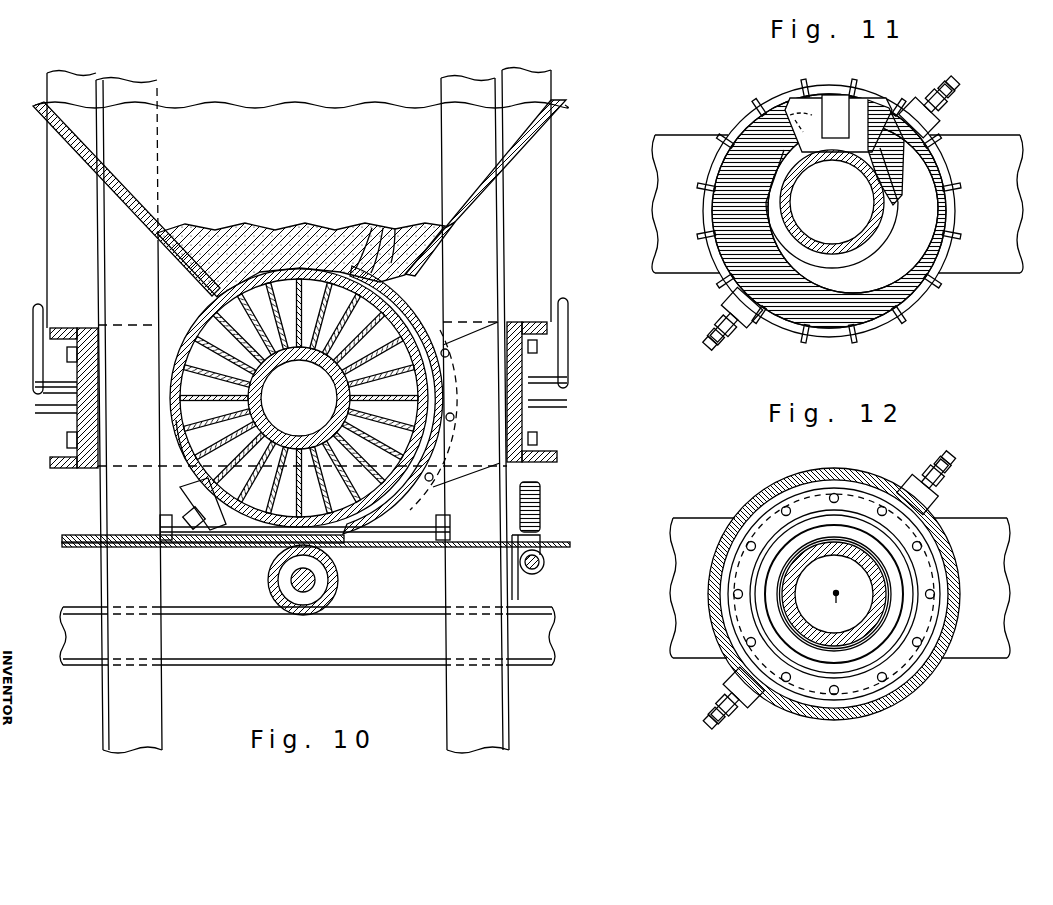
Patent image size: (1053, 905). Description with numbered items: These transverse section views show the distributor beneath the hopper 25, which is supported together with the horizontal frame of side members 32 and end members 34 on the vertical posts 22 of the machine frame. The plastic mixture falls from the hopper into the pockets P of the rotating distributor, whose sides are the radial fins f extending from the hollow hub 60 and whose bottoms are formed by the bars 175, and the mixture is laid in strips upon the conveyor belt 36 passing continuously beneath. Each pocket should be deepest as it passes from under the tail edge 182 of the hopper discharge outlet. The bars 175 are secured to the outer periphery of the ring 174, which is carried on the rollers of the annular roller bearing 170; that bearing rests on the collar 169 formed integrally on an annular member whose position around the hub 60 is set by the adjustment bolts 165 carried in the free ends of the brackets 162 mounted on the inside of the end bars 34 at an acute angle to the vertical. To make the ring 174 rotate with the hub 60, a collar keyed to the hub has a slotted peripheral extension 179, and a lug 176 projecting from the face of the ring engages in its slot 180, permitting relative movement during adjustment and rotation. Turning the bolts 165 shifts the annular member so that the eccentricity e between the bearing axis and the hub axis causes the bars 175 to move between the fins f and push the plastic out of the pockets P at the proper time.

In FIG. 10, the vertical posts 22 is at (148, 88).
In FIG. 10, the hopper 25 is at (306, 160).
In FIG. 10, the pockets P is at (375, 239).
In FIG. 10, the tail edge 182 is at (423, 278).
In FIG. 10, the end members 34 is at (88, 326).
In FIG. 11, the end members 34 is at (1005, 140).
In FIG. 12, the end members 34 is at (1005, 532).
In FIG. 10, the side members 32 is at (58, 324).
In FIG. 10, the bars 175 is at (178, 360).
In FIG. 10, the hollow hub 60 is at (299, 398).
In FIG. 11, the hollow hub 60 is at (832, 202).
In FIG. 12, the hollow hub 60 is at (834, 594).
In FIG. 10, the radial fins f is at (186, 460).
In FIG. 10, the brackets 162 is at (183, 486).
In FIG. 11, the brackets 162 is at (945, 124).
In FIG. 12, the brackets 162 is at (946, 508).
In FIG. 10, the conveyor belt 36 is at (222, 548).
In FIG. 11, the adjustment bolts 165 is at (944, 80).
In FIG. 11, the slot 180 is at (836, 96).
In FIG. 11, the lug 176 is at (842, 110).
In FIG. 11, the slotted peripheral extension 179 is at (790, 125).
In FIG. 11, the ring 174 is at (938, 246).
In FIG. 12, the ring 174 is at (855, 490).
In FIG. 12, the collar 169 is at (837, 498).
In FIG. 12, the annular roller bearing 170 is at (790, 510).
In FIG. 12, the eccentricity e is at (840, 607).